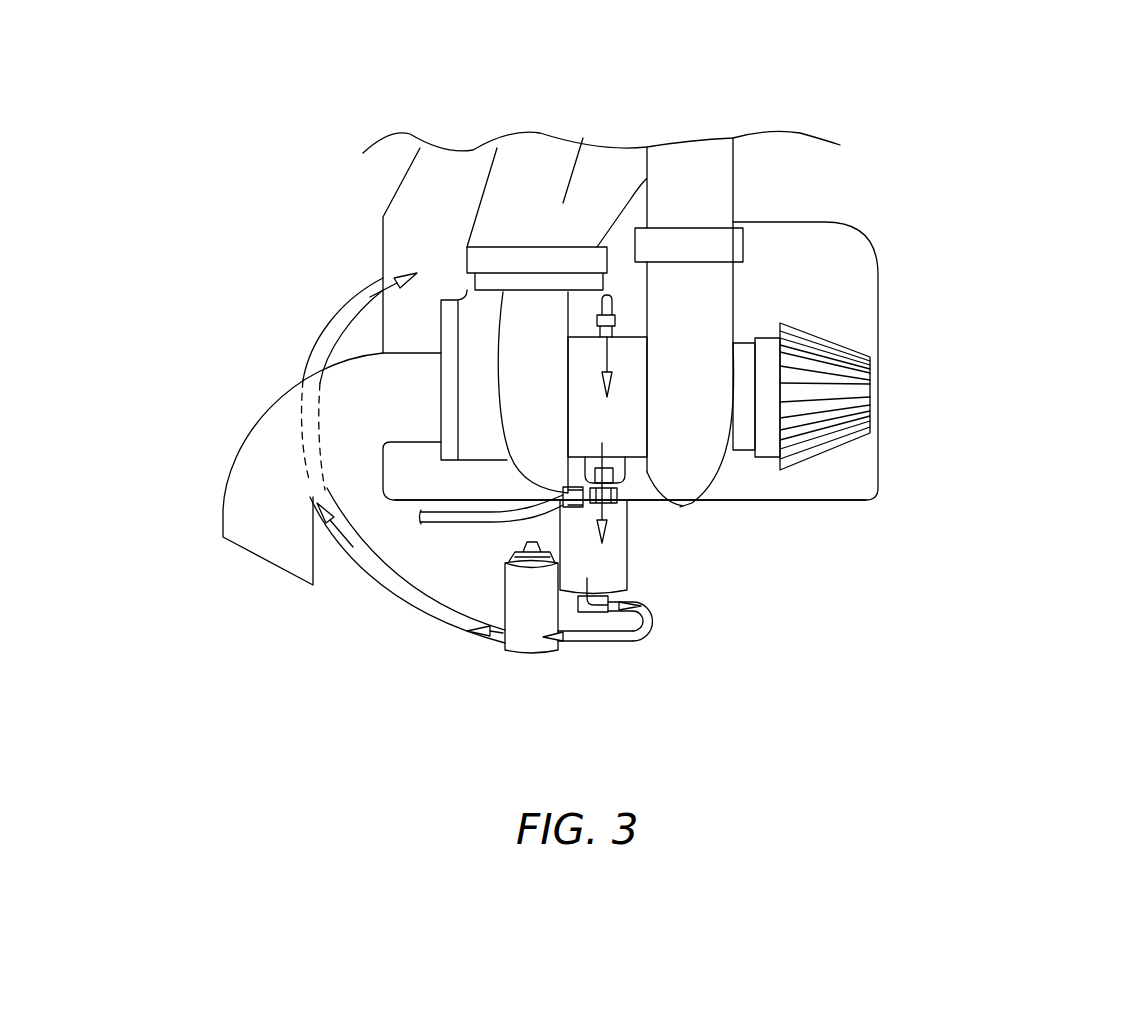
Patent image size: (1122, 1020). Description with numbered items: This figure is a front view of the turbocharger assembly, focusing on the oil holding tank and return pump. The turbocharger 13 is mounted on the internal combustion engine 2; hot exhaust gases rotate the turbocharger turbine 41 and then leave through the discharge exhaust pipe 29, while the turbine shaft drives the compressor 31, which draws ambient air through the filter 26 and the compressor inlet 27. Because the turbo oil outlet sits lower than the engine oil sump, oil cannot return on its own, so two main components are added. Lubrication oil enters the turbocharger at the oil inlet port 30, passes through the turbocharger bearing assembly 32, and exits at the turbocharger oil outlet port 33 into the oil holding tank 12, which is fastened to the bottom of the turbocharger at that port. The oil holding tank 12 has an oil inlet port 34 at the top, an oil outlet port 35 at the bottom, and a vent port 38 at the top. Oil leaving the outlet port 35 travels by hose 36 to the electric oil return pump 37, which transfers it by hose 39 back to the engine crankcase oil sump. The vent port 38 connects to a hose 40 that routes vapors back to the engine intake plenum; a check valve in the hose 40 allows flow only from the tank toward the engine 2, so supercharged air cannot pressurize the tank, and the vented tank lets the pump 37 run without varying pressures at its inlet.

The internal combustion engine 2 is at (380, 212).
The oil holding tank 12 is at (617, 568).
The turbocharger 13 is at (755, 517).
The filter 26 is at (803, 327).
The compressor inlet 27 is at (750, 400).
The discharge exhaust pipe 29 is at (275, 482).
The oil inlet port 30 is at (618, 308).
The compressor 31 is at (868, 433).
The turbocharger bearing assembly 32 is at (623, 413).
The turbocharger oil outlet port 33 is at (625, 470).
The oil inlet port 34 is at (625, 505).
The oil outlet port 35 is at (593, 612).
The hose 36 is at (598, 642).
The electric oil return pump 37 is at (537, 618).
The vent port 38 is at (498, 522).
The hose 39 is at (363, 570).
The hose 40 is at (450, 515).
The turbocharger turbine 41 is at (533, 390).